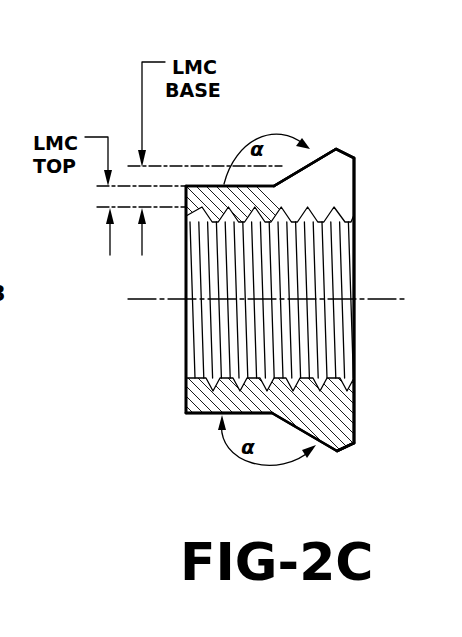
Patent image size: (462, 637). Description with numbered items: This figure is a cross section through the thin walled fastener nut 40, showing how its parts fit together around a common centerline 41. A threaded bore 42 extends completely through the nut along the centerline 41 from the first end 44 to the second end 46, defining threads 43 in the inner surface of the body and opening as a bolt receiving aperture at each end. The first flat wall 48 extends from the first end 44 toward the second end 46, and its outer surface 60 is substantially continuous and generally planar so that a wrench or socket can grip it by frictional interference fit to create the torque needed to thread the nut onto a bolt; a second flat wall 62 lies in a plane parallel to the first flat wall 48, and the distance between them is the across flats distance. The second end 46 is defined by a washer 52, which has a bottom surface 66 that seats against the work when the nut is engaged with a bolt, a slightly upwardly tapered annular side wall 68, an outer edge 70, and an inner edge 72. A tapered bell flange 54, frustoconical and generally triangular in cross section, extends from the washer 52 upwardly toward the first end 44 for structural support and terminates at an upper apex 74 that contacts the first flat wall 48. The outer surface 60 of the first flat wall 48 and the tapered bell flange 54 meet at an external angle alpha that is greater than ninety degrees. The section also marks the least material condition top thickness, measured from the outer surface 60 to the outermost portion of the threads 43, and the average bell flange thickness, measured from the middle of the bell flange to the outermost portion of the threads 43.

The fastener nut 40 is at (375, 170).
The centerline 41 is at (138, 299).
The threaded bore 42 is at (226, 357).
The threads 43 is at (224, 299).
The first end 44 is at (180, 401).
The second end 46 is at (364, 406).
The first flat wall 48 is at (196, 416).
The washer 52 is at (325, 145).
The tapered bell flange 54 is at (292, 177).
The outer surface 60 is at (217, 461).
The second flat wall 62 is at (220, 180).
The bottom surface 66 is at (396, 314).
The annular side wall 68 is at (346, 154).
The outer edge 70 is at (340, 452).
The inner edge 72 is at (354, 446).
The upper apex 74 is at (279, 418).